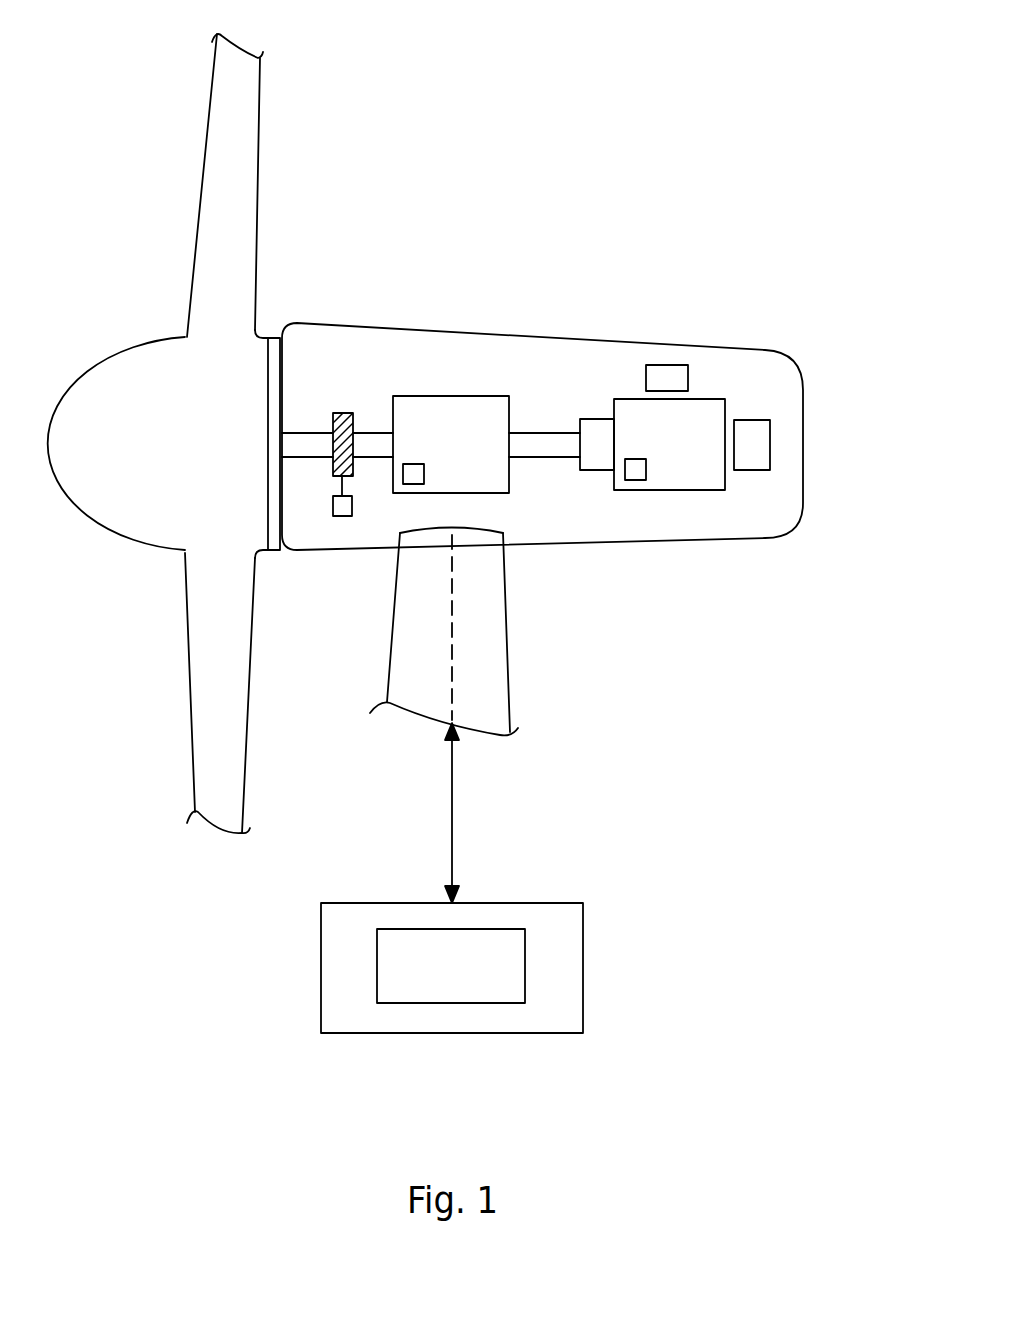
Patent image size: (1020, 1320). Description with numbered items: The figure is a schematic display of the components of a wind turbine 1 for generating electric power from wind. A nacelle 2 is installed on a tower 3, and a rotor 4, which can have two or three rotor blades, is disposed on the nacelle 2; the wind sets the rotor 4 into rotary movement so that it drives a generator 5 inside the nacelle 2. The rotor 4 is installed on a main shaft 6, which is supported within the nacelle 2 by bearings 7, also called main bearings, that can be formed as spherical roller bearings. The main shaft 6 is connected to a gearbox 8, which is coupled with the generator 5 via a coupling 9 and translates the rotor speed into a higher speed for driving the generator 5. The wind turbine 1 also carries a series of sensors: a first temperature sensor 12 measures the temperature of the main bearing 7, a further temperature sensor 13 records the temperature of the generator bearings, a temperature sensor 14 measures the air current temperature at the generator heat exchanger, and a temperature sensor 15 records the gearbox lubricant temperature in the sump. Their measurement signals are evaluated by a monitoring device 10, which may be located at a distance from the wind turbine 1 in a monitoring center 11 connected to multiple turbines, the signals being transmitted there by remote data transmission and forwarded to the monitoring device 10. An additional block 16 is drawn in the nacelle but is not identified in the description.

The wind turbine 1 is at (603, 137).
The nacelle 2 is at (713, 347).
The tower 3 is at (508, 656).
The rotor 4 is at (195, 237).
The generator 5 is at (663, 463).
The main shaft 6 is at (307, 445).
The bearings 7 is at (345, 413).
The gearbox 8 is at (438, 452).
The coupling 9 is at (592, 419).
The monitoring device 10 is at (438, 978).
The monitoring center 11 is at (572, 967).
The first temperature sensor 12 is at (341, 517).
The temperature sensor 13 is at (633, 470).
The temperature sensor 14 is at (660, 377).
The temperature sensor 15 is at (413, 480).
The converter 16 is at (750, 448).